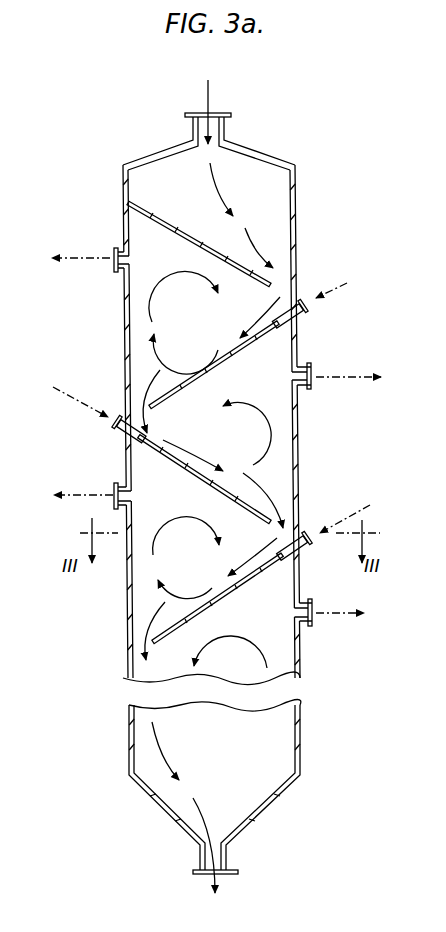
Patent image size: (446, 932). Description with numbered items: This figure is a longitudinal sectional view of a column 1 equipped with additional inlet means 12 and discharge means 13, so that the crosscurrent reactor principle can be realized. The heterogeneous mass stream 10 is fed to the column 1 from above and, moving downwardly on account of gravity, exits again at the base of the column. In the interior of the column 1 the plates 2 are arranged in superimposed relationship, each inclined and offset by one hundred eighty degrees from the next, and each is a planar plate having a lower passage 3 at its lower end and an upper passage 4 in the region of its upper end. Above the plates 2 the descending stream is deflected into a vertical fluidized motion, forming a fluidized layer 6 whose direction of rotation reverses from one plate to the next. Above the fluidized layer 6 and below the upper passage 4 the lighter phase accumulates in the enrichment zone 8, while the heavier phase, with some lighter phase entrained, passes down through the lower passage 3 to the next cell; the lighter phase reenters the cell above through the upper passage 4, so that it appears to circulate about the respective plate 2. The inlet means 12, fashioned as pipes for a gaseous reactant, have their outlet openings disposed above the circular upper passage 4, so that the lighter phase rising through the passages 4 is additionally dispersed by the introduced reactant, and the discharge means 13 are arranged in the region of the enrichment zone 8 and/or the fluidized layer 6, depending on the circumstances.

The column 1 is at (296, 205).
The plates 2 is at (184, 239).
The lower passage 3 is at (128, 400).
The upper passage 4 is at (292, 340).
The fluidized layer 6 is at (236, 441).
The enrichment zone 8 is at (270, 357).
The heterogeneous mass stream 10 is at (210, 94).
The inlet means 12 is at (300, 298).
The discharge means 13 is at (307, 386).